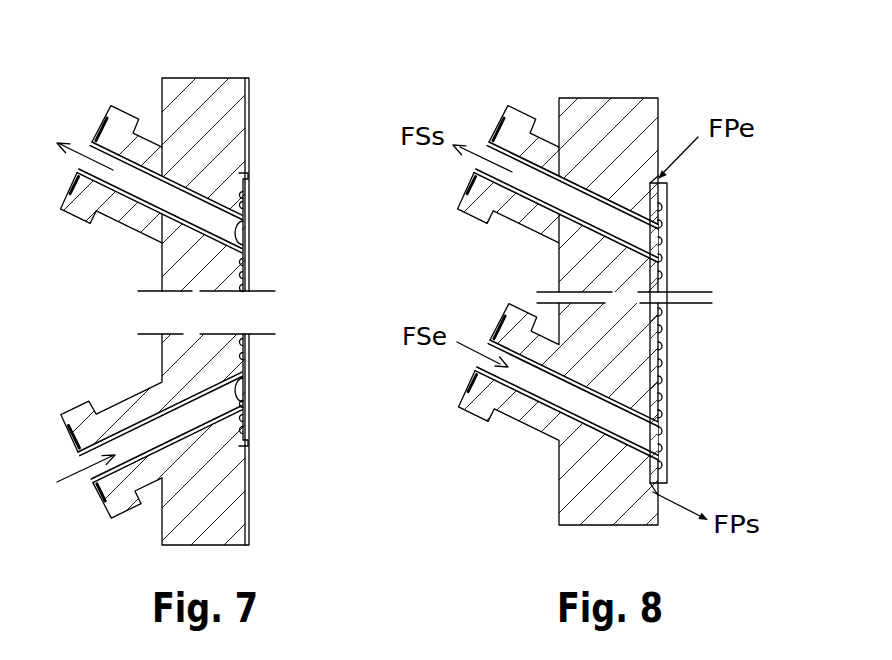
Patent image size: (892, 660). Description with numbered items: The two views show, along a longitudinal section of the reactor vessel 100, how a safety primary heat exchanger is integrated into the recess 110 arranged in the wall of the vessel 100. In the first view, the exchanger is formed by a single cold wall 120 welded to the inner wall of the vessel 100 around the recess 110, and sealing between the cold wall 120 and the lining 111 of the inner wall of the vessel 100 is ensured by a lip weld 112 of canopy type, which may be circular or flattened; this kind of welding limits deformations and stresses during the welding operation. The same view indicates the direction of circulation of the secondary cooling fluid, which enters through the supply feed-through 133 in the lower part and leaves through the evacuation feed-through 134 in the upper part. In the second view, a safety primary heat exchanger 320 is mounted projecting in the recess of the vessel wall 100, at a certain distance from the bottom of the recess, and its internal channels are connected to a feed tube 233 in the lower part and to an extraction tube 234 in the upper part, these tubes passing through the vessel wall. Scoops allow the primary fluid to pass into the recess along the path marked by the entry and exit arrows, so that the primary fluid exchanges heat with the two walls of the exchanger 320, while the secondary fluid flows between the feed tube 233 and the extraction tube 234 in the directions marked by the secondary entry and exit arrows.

In FIG. 7, the vessel 100 is at (162, 96).
In FIG. 8, the vessel 100 is at (592, 108).
In FIG. 7, the recess 110 is at (229, 173).
In FIG. 7, the lining 111 is at (250, 100).
In FIG. 7, the lip weld 112 is at (262, 177).
In FIG. 7, the cold wall 120 is at (250, 362).
In FIG. 7, the supply feed-through 133 is at (127, 428).
In FIG. 7, the evacuation feed-through 134 is at (128, 198).
In FIG. 8, the feed tube 233 is at (528, 397).
In FIG. 8, the extraction tube 234 is at (515, 193).
In FIG. 8, the safety primary heat exchanger 320 is at (709, 377).